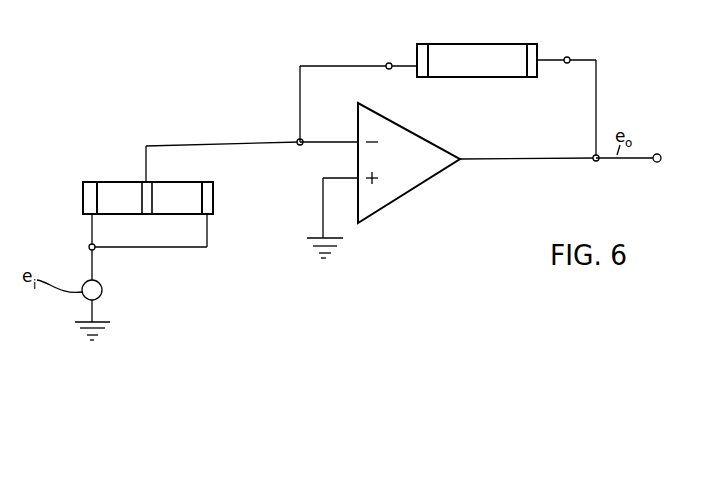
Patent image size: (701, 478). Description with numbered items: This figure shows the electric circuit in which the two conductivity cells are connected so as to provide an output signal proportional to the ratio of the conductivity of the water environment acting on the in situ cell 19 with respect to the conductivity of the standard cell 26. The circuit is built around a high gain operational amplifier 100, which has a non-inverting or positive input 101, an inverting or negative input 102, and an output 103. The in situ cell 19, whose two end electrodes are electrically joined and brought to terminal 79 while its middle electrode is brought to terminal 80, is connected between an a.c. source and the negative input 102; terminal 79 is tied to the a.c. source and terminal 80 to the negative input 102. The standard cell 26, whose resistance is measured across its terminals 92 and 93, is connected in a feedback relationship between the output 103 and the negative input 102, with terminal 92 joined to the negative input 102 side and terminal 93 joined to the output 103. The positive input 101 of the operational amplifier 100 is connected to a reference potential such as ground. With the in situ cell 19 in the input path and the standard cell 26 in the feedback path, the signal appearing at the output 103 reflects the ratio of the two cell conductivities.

The in situ cell 19 is at (162, 215).
The standard cell 26 is at (490, 78).
The terminal 79 is at (88, 247).
The terminal 80 is at (297, 141).
The terminal 92 is at (391, 63).
The terminal 93 is at (567, 57).
The operational amplifier 100 is at (420, 187).
The non-inverting input 101 is at (331, 178).
The inverting input 102 is at (328, 141).
The output 103 is at (527, 155).